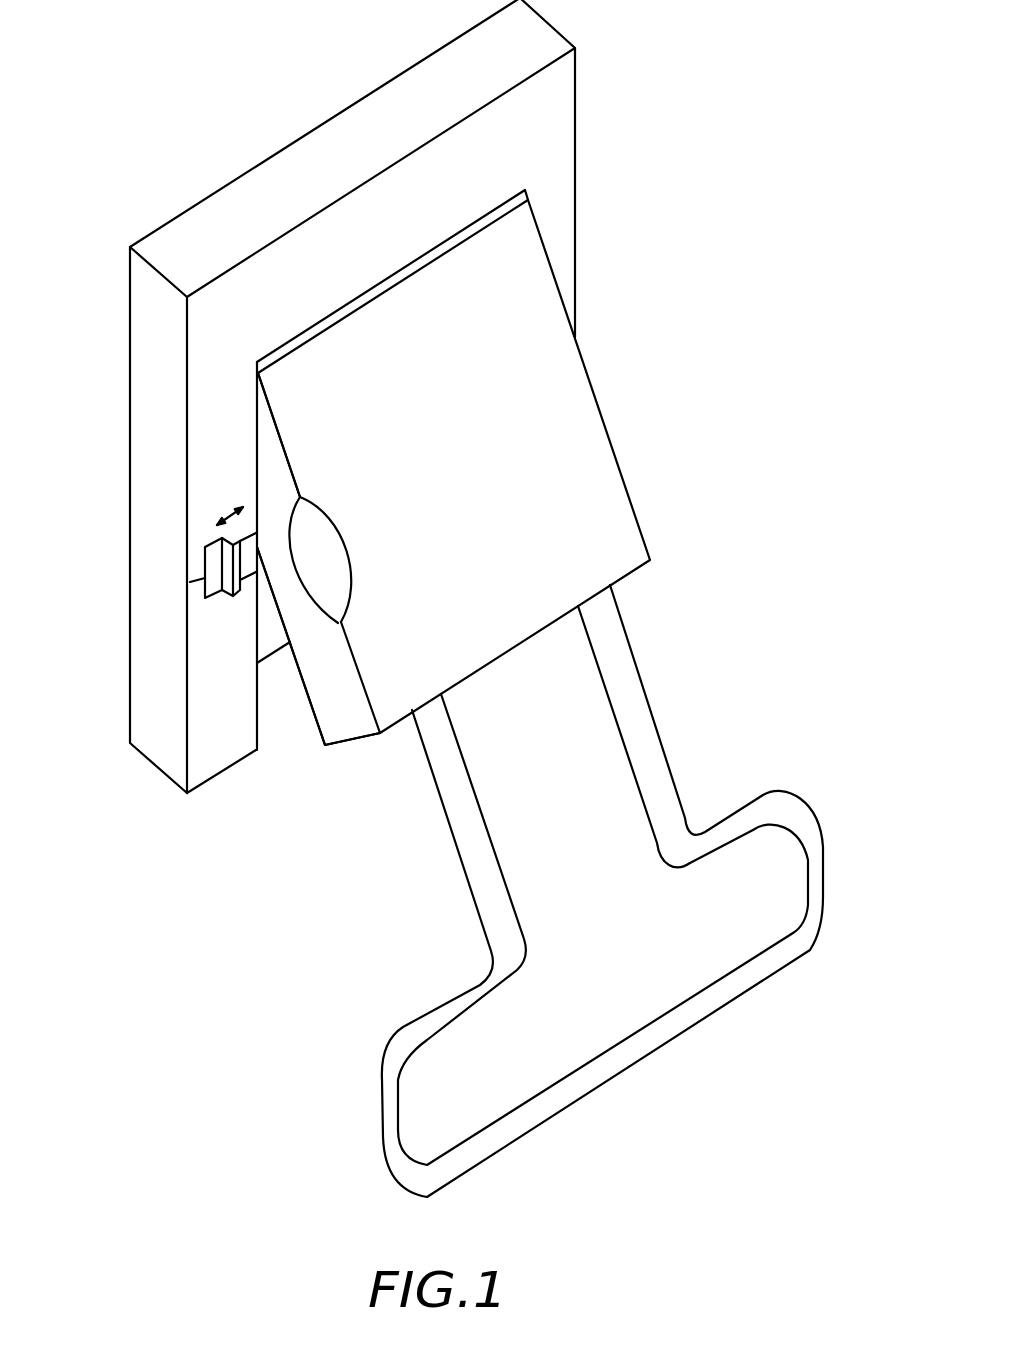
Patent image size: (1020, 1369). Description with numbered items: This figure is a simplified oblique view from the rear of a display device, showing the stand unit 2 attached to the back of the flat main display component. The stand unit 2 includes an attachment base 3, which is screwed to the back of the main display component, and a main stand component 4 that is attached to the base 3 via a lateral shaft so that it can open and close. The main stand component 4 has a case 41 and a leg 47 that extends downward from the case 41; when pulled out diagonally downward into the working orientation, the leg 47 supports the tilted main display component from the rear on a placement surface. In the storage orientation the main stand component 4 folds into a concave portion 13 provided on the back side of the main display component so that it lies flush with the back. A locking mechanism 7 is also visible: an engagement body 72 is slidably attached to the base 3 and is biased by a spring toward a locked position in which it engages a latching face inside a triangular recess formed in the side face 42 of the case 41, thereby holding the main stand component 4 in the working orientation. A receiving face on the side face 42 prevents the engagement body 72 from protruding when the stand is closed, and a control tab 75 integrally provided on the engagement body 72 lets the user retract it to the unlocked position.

The stand unit 2 is at (541, 693).
The attachment base 3 is at (342, 122).
The main stand component 4 is at (541, 693).
The locking mechanism 7 is at (152, 540).
The concave portion 13 is at (270, 695).
The case 41 is at (510, 461).
The side face 42 is at (345, 715).
The leg 47 is at (633, 653).
The engagement body 72 is at (263, 530).
The control tab 75 is at (203, 586).